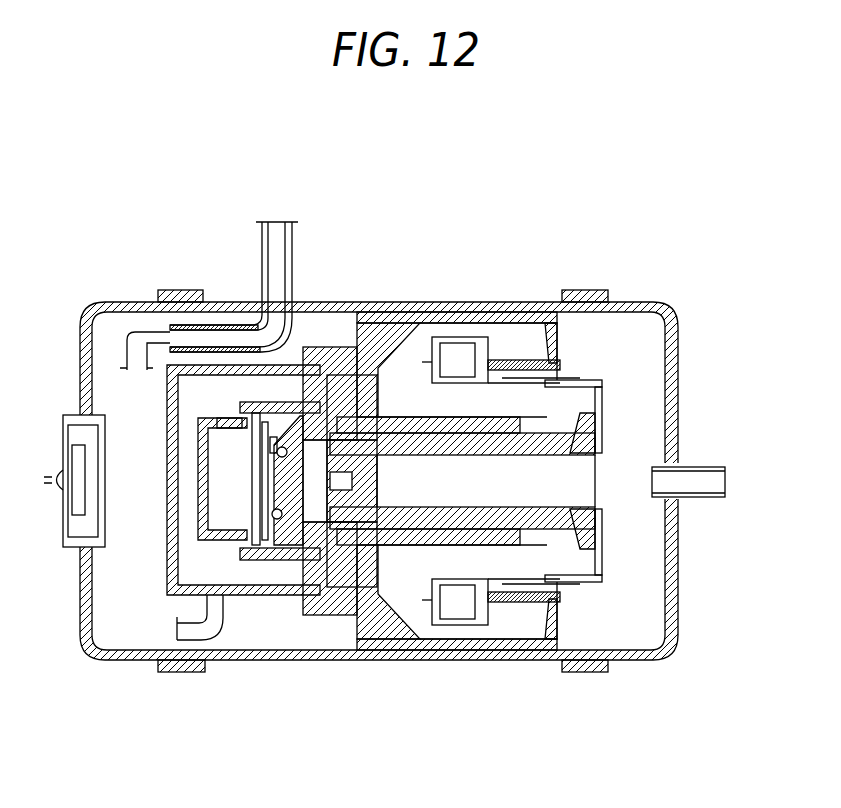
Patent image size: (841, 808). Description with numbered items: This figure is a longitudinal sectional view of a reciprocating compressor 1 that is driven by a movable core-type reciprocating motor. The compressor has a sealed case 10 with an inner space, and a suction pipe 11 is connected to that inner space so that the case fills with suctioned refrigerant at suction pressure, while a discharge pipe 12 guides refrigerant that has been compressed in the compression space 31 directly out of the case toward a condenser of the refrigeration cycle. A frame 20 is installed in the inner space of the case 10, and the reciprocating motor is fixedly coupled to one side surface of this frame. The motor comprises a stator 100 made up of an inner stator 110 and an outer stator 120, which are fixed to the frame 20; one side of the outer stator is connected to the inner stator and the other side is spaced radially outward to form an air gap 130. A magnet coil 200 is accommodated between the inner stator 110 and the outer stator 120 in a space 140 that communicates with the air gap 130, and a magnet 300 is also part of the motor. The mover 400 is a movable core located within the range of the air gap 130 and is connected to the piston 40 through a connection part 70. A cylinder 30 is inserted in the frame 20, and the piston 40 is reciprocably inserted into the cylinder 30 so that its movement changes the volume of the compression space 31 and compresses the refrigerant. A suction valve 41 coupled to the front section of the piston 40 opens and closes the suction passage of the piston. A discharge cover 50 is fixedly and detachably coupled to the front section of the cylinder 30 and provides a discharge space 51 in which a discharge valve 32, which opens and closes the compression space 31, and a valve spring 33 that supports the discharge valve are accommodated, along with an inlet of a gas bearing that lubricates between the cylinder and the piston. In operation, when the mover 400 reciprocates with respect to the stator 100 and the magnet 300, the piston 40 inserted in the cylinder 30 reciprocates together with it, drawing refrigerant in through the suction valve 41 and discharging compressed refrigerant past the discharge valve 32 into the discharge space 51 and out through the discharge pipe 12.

The reciprocating compressor 1 is at (641, 248).
The case 10 is at (102, 300).
The suction pipe 11 is at (703, 497).
The discharge pipe 12 is at (296, 228).
The frame 20 is at (362, 318).
The cylinder 30 is at (350, 600).
The compression space 31 is at (326, 348).
The discharge valve 32 is at (286, 548).
The valve spring 33 is at (258, 558).
The piston 40 is at (390, 545).
The suction valve 41 is at (322, 592).
The discharge cover 50 is at (170, 570).
The discharge space 51 is at (278, 422).
The connection part 70 is at (603, 396).
The stator 100 is at (378, 212).
The inner stator 110 is at (396, 392).
The outer stator 120 is at (409, 320).
The air gap 130 is at (550, 362).
The space 140 is at (456, 337).
The magnet coil 200 is at (441, 334).
The magnet 300 is at (537, 358).
The mover 400 is at (507, 358).